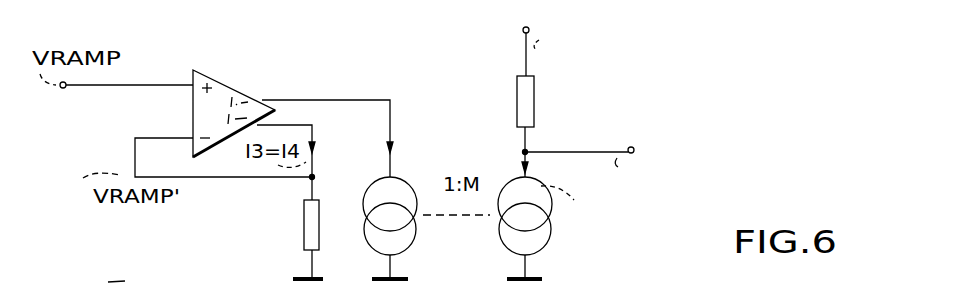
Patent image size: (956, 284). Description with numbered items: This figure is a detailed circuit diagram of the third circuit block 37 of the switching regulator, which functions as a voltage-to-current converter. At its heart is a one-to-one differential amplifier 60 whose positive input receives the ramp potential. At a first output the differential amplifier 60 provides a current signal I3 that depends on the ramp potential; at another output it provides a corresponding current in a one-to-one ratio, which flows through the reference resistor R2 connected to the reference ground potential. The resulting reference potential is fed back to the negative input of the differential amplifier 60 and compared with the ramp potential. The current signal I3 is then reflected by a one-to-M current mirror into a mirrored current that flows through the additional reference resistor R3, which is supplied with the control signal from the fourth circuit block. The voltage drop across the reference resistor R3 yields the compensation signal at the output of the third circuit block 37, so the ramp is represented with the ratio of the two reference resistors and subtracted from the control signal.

The differential amplifier 60 is at (233, 87).
The third circuit block 37 is at (595, 150).
The reference resistor R2 is at (304, 233).
The reference resistor R3 is at (517, 106).
The current signal I3 is at (383, 160).